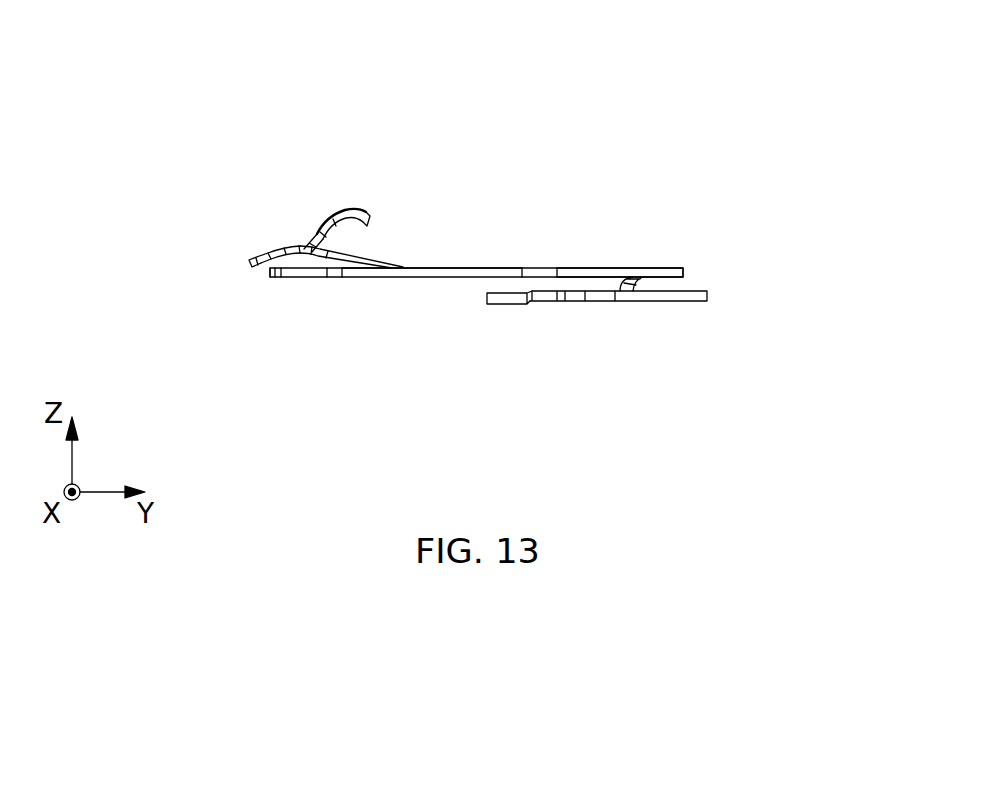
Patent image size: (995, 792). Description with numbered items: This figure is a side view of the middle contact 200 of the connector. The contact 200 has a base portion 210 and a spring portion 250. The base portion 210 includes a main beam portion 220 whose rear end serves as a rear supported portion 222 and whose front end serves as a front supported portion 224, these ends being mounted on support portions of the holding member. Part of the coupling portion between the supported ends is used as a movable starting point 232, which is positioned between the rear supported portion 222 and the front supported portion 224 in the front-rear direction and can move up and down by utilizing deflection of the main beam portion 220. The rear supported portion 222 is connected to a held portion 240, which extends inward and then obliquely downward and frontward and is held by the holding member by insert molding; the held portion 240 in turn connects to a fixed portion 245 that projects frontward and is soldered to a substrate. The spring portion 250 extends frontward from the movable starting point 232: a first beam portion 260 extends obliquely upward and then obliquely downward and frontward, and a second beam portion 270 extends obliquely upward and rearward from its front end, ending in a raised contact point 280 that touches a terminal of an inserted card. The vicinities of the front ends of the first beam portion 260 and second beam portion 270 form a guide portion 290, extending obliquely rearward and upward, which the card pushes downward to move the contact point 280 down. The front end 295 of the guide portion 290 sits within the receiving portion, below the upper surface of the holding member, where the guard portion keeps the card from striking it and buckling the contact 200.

The contact 200 is at (537, 138).
The base portion 210 is at (432, 289).
The main beam portion 220 is at (517, 272).
The rear supported portion 222 is at (680, 270).
The front supported portion 224 is at (277, 273).
The movable starting point 232 is at (448, 258).
The held portion 240 is at (603, 328).
The fixed portion 245 is at (500, 301).
The spring portion 250 is at (366, 199).
The first beam portion 260 is at (322, 257).
The second beam portion 270 is at (309, 238).
The contact point 280 is at (343, 207).
The guide portion 290 is at (268, 255).
The front end 295 is at (249, 264).